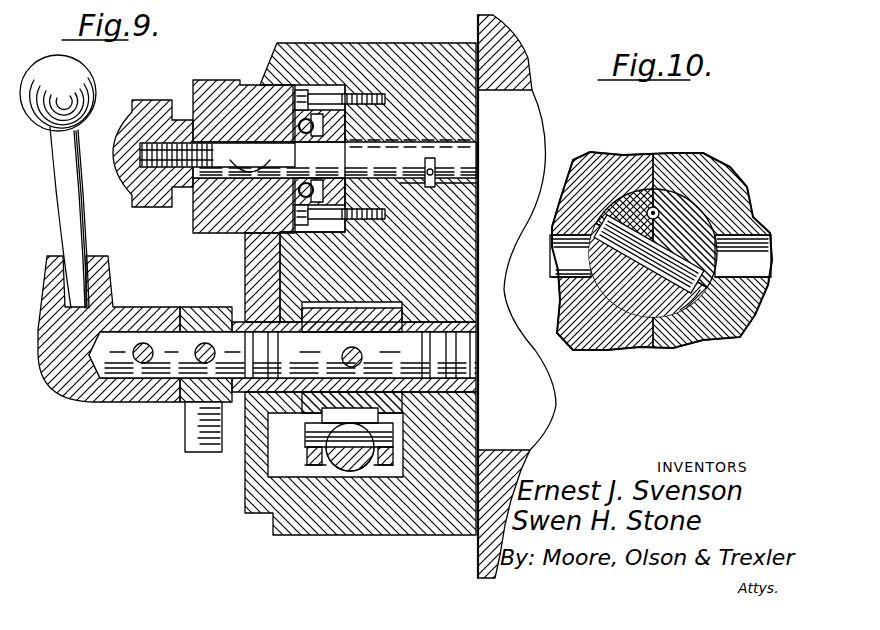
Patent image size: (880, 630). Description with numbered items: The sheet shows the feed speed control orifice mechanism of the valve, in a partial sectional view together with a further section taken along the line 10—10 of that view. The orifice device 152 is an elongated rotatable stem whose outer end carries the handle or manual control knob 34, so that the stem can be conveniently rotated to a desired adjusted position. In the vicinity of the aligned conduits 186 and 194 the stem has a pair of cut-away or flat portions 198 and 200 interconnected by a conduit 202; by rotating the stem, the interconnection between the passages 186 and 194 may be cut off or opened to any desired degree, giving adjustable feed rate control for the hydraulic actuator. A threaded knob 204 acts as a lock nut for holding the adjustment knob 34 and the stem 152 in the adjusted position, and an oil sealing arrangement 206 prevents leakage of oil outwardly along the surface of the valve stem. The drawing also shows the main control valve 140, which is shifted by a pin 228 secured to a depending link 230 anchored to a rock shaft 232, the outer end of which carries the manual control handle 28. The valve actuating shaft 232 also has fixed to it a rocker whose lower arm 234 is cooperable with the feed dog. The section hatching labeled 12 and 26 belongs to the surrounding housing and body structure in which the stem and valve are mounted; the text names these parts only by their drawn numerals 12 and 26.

In FIG. 9, the section line 10— 10 is at (452, 94).
In FIG. 9, the housing wall 12 is at (513, 57).
In FIG. 9, the head body 26 is at (416, 46).
In FIG. 10, the head body 26 is at (735, 183).
In FIG. 9, the manual control handle 28 is at (72, 228).
In FIG. 9, the manual control knob 34 is at (213, 83).
In FIG. 9, the main control valve 140 is at (350, 460).
In FIG. 9, the orifice device 152 is at (478, 180).
In FIG. 10, the orifice device 152 is at (673, 200).
In FIG. 10, the conduit 186 is at (770, 240).
In FIG. 10, the conduit 194 is at (553, 253).
In FIG. 9, the flat portion 198 is at (447, 194).
In FIG. 10, the flat portion 198 is at (687, 300).
In FIG. 10, the flat portion 200 is at (612, 187).
In FIG. 9, the conduit 202 is at (436, 172).
In FIG. 10, the conduit 202 is at (655, 263).
In FIG. 9, the threaded knob 204 is at (158, 202).
In FIG. 9, the oil sealing arrangement 206 is at (319, 84).
In FIG. 9, the pin 228 is at (350, 434).
In FIG. 9, the depending link 230 is at (400, 397).
In FIG. 9, the rock shaft 232 is at (128, 372).
In FIG. 9, the lower arm 234 is at (192, 440).